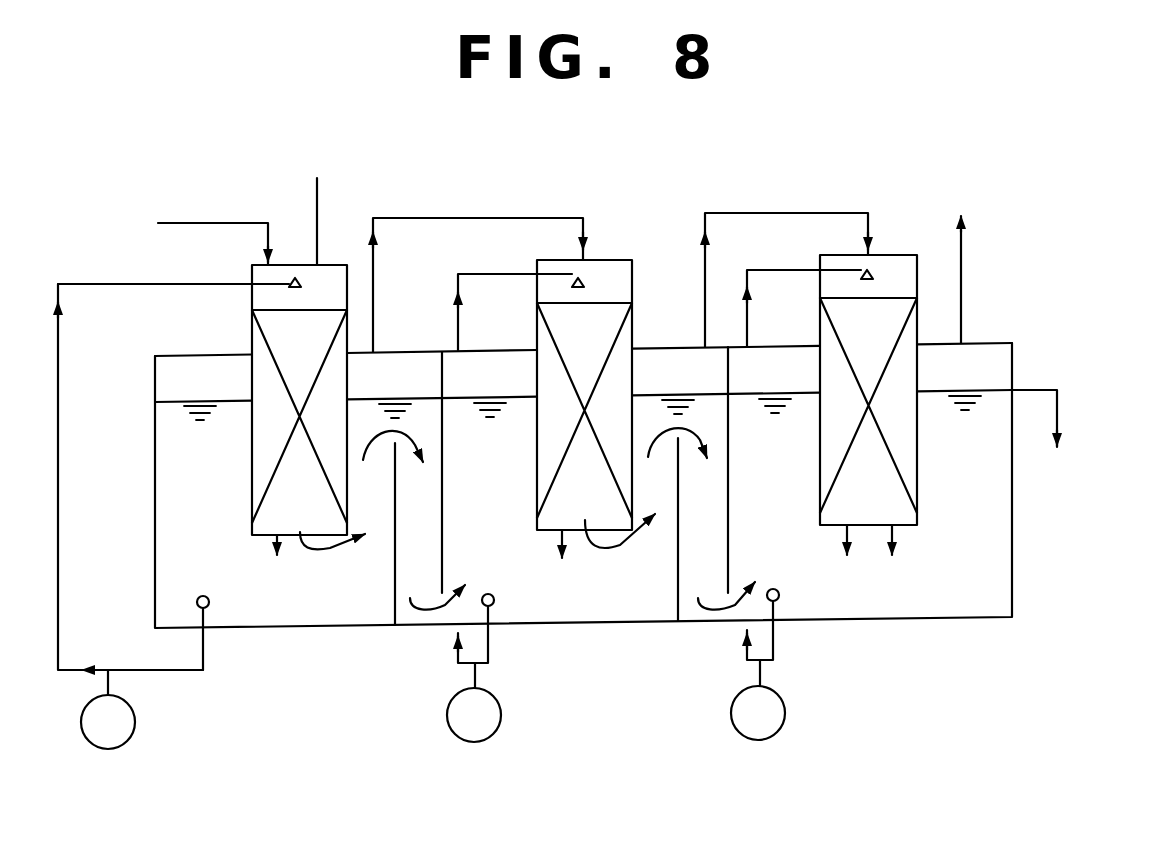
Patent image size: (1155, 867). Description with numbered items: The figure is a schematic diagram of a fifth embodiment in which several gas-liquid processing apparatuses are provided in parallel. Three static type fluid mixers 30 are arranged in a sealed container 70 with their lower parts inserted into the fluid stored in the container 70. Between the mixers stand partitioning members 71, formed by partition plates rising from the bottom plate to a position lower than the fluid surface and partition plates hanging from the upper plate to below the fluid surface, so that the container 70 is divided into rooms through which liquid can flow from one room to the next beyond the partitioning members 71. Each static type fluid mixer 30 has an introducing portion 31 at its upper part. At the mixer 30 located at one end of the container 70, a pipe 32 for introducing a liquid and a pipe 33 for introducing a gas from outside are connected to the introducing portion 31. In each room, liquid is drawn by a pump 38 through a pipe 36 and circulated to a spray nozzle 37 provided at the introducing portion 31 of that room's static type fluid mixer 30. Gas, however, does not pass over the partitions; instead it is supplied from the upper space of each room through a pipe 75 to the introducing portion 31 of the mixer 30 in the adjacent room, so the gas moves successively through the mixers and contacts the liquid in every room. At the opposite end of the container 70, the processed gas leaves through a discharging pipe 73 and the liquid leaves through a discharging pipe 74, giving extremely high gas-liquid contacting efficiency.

The static type fluid mixer 30 is at (252, 342).
The introducing portion 31 is at (252, 272).
The pipe for introducing a liquid 32 is at (178, 220).
The pipe for introducing a gas 33 is at (313, 200).
The pipe 36 is at (205, 657).
The spray nozzle 37 is at (302, 283).
The pump 38 is at (117, 749).
The sealed container 70 is at (155, 505).
The partitioning member 71 is at (394, 578).
The discharging pipe for gas 73 is at (963, 257).
The discharging pipe for liquid 74 is at (1060, 410).
The pipe 75 is at (490, 218).